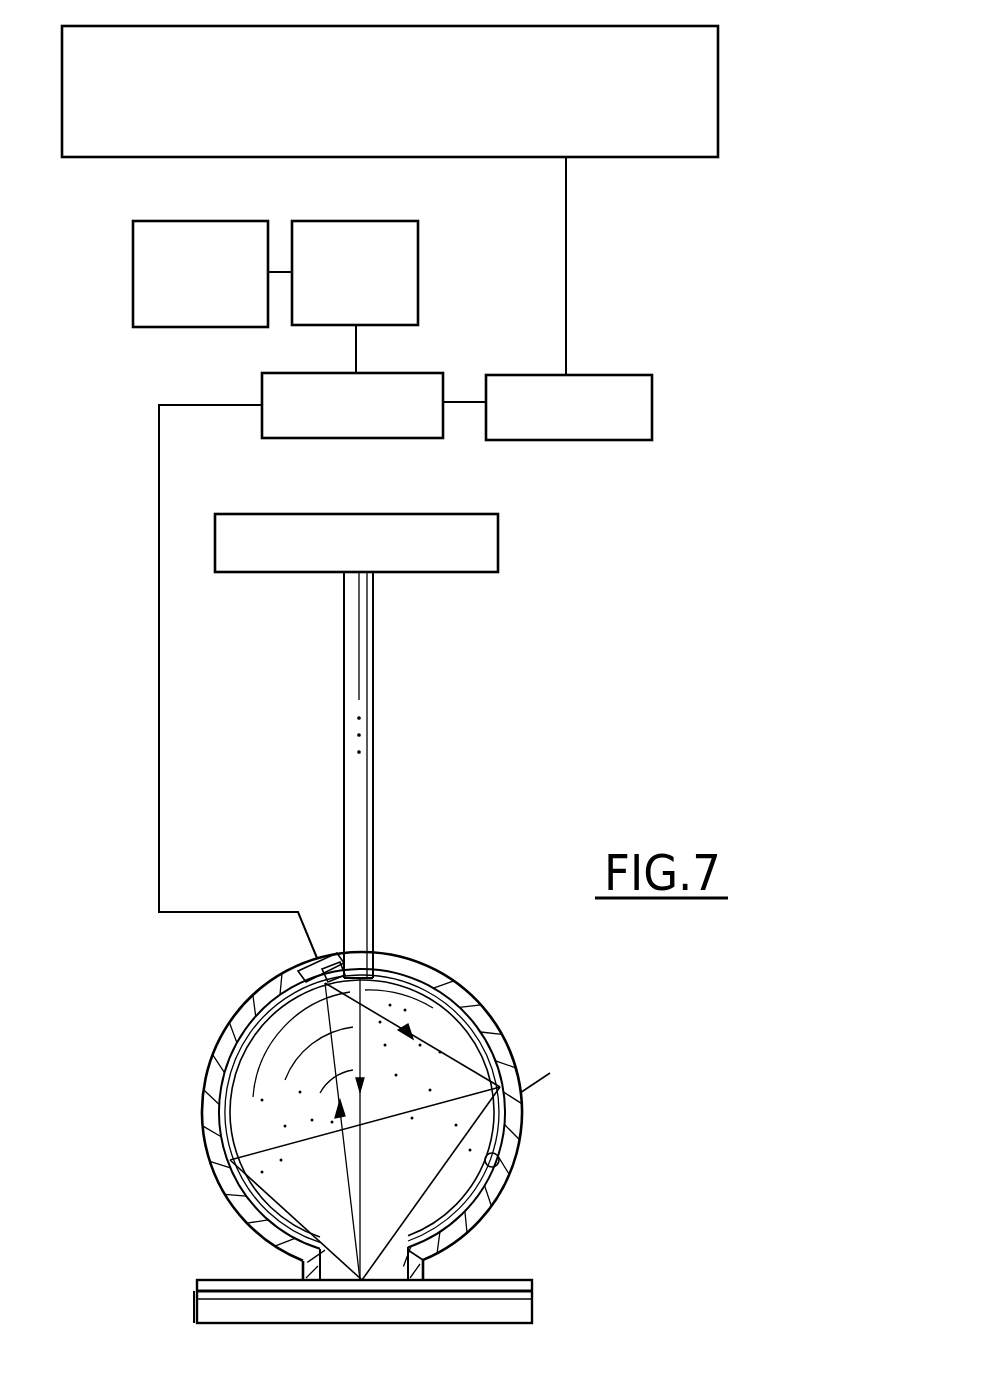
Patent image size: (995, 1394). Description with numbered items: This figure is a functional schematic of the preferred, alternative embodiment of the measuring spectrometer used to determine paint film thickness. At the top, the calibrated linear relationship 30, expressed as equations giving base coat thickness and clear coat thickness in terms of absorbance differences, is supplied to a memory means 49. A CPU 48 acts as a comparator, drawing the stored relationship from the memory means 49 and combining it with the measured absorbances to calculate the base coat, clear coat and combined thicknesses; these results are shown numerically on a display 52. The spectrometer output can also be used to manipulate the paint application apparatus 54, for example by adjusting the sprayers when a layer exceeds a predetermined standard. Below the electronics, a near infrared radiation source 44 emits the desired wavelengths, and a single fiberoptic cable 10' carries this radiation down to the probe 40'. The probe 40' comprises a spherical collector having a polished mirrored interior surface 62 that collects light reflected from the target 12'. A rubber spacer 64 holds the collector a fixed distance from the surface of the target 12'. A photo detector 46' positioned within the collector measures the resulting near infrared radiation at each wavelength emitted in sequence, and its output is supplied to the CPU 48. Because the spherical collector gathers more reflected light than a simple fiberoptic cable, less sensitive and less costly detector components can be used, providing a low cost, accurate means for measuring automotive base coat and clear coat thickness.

The calibrated linear relationship 30 is at (719, 128).
The paint application apparatus 54 is at (133, 272).
The display 52 is at (420, 243).
The CPU 48 is at (263, 378).
The memory means 49 is at (653, 405).
The near infrared radiation source 44 is at (500, 540).
The fiberoptic cable 10' is at (394, 775).
The probe 40' is at (384, 1116).
The photo detector 46' is at (266, 971).
The polished mirrored interior surface 62 is at (503, 1168).
The rubber spacer 64 is at (427, 1273).
The target 12' is at (416, 1282).